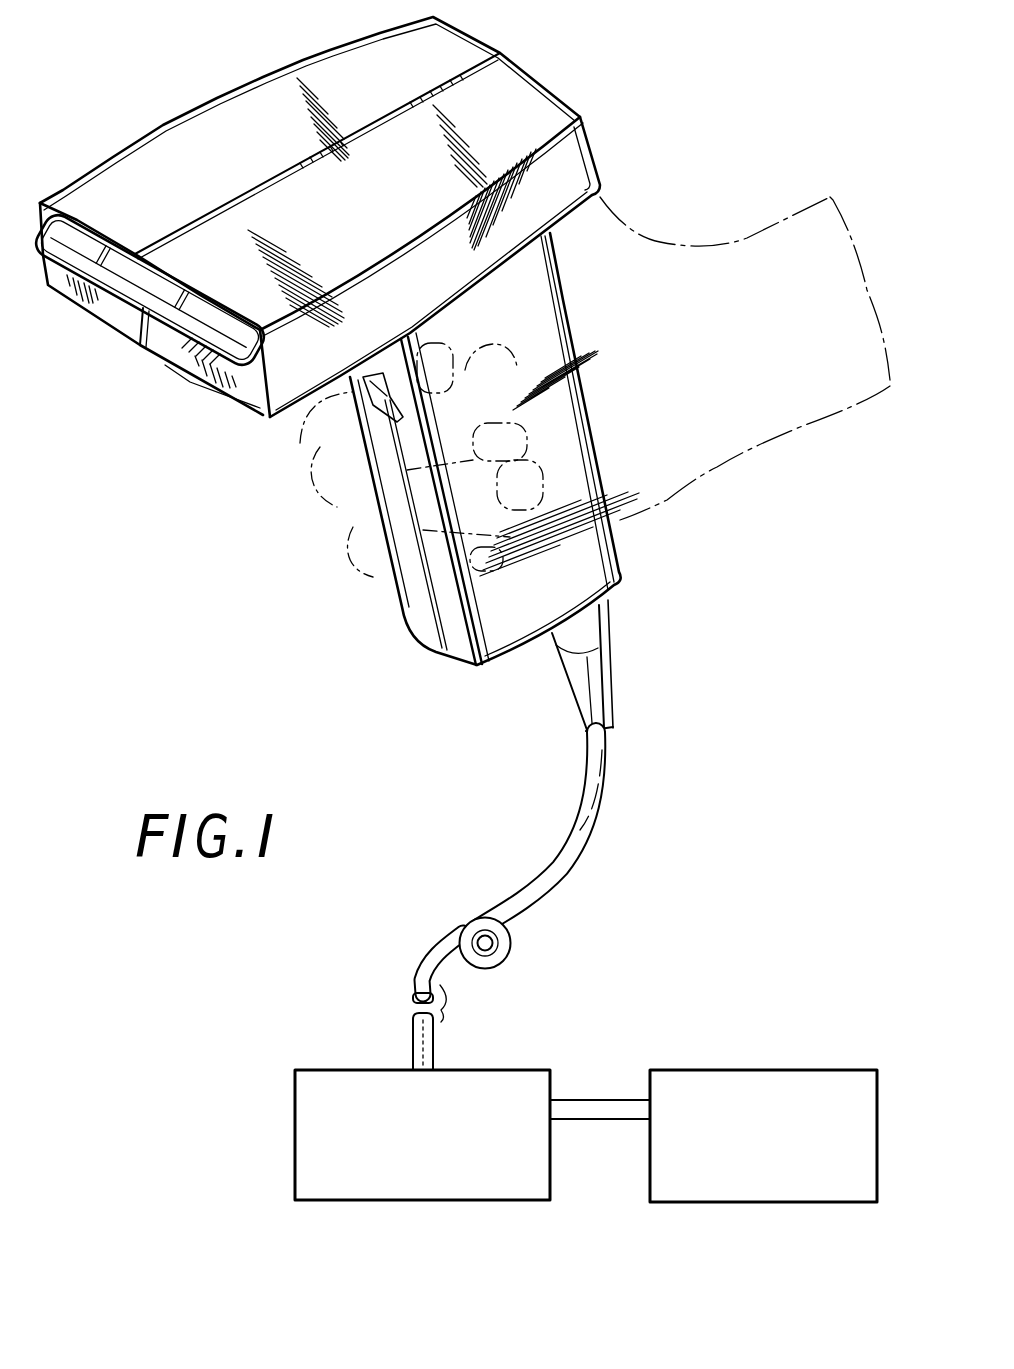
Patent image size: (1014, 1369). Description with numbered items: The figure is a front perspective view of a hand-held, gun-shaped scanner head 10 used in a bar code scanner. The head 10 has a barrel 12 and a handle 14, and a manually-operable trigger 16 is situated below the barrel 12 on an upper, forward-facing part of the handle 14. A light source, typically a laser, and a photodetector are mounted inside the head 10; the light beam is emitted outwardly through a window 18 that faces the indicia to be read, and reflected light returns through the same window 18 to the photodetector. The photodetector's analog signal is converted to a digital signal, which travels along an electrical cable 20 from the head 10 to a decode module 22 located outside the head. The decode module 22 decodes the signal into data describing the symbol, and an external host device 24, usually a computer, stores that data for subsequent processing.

The scanner head 10 is at (730, 100).
The barrel 12 is at (555, 64).
The handle 14 is at (626, 550).
The trigger 16 is at (358, 430).
The window 18 is at (210, 322).
The electrical cable 20 is at (613, 680).
The decode module 22 is at (537, 1070).
The host device 24 is at (860, 1070).